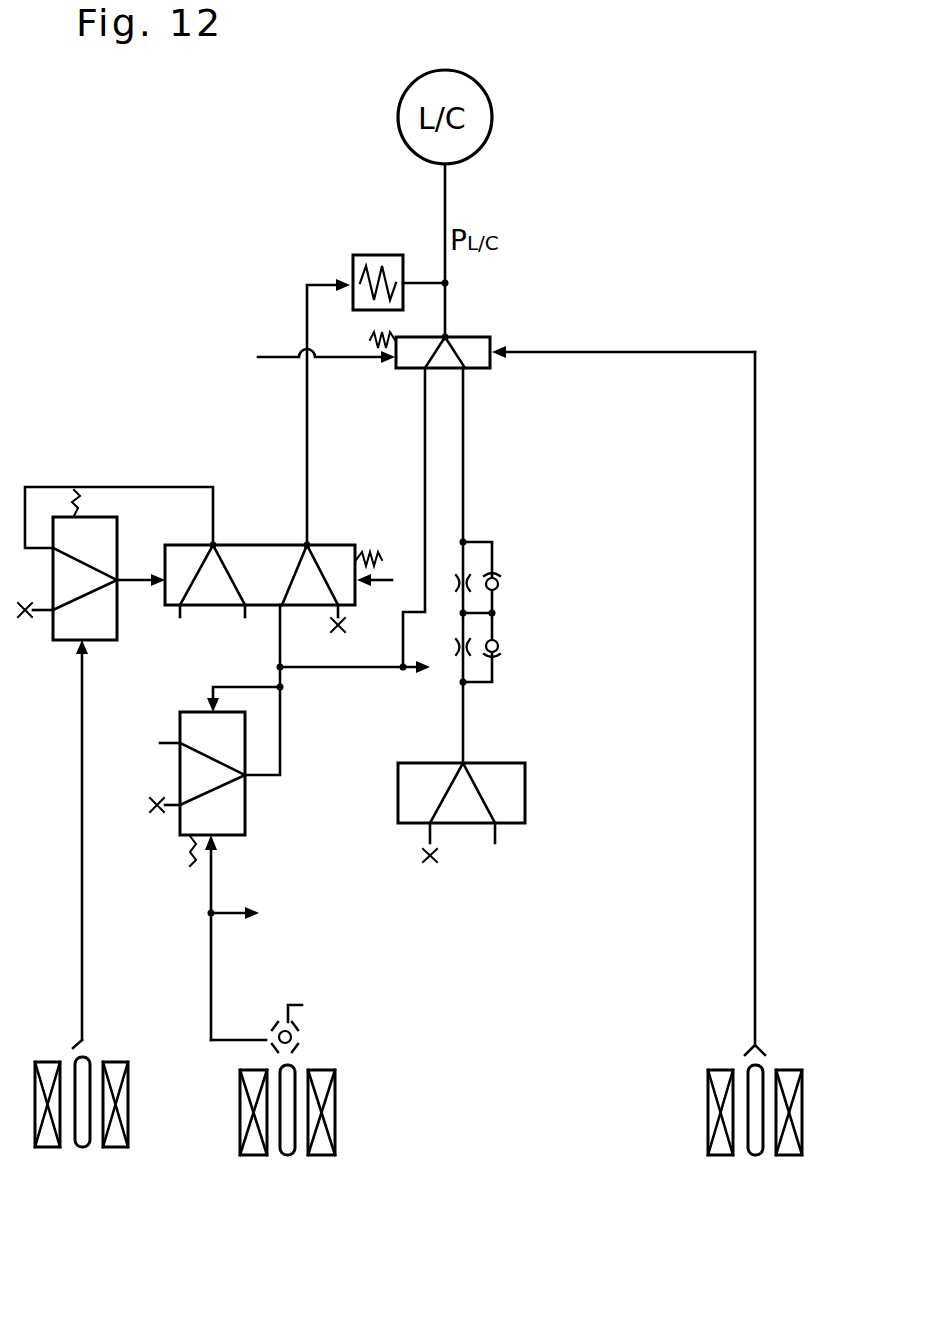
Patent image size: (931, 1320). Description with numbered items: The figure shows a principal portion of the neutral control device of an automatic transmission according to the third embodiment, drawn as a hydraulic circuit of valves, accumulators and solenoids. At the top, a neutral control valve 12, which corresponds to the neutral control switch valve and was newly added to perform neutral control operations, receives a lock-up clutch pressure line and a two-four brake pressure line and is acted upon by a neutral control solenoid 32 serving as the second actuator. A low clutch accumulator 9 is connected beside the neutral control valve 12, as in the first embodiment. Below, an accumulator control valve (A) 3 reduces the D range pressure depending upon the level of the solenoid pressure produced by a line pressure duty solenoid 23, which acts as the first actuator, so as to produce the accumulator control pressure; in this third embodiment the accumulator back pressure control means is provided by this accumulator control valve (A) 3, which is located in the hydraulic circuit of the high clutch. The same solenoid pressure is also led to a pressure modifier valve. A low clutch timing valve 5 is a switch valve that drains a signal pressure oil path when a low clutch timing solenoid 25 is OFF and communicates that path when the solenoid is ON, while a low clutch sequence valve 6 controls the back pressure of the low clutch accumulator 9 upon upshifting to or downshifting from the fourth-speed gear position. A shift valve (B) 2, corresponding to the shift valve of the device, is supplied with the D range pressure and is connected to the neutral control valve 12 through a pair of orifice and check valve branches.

The shift valve (B) 2 is at (504, 756).
The accumulator control valve (A) 3 is at (266, 820).
The low clutch timing valve 5 is at (126, 532).
The low clutch sequence valve 6 is at (330, 544).
The low clutch accumulator 9 is at (378, 250).
The neutral control valve 12 is at (470, 336).
The line pressure duty solenoid 23 is at (323, 1062).
The low clutch timing solenoid 25 is at (118, 1052).
The neutral control solenoid 32 is at (790, 1062).